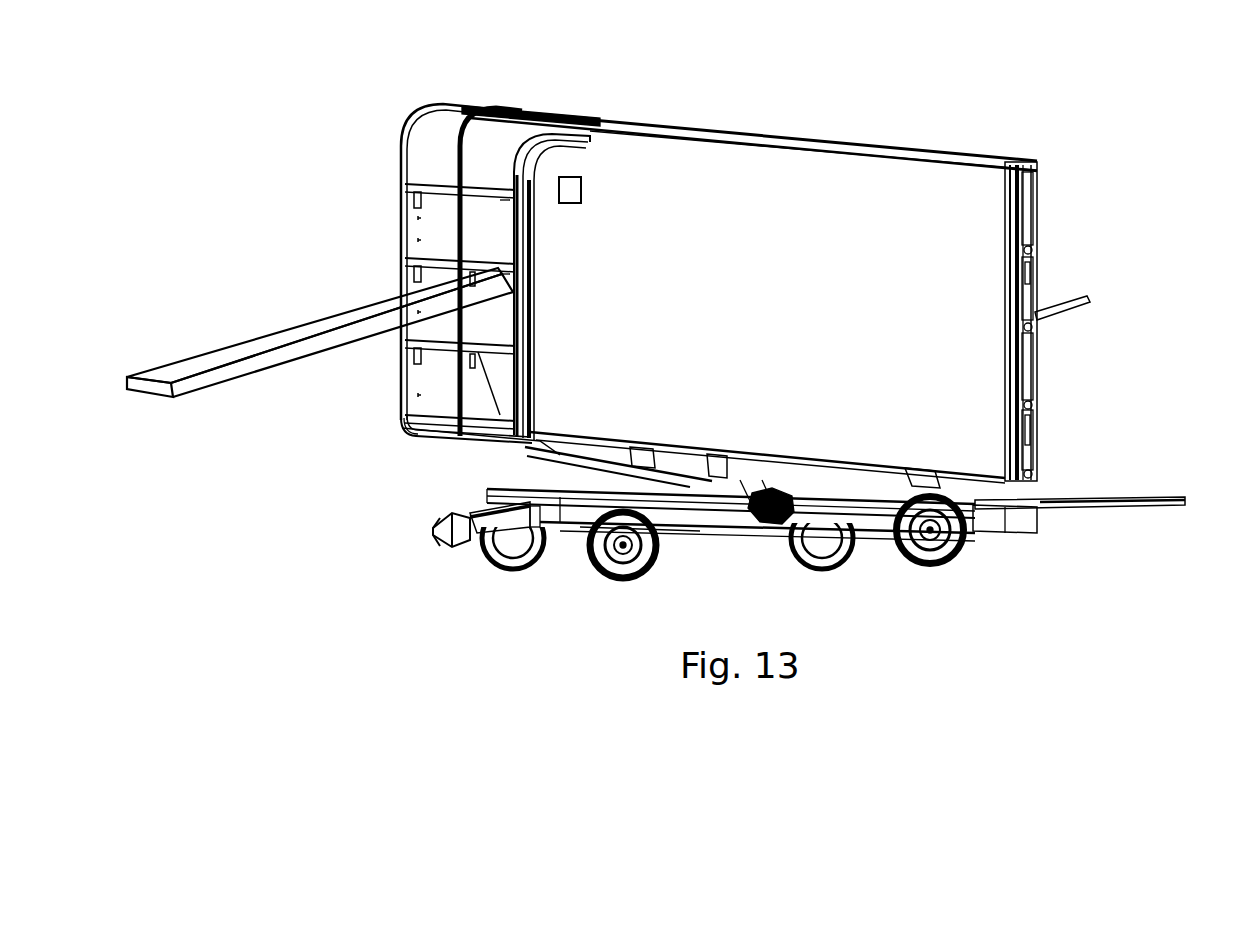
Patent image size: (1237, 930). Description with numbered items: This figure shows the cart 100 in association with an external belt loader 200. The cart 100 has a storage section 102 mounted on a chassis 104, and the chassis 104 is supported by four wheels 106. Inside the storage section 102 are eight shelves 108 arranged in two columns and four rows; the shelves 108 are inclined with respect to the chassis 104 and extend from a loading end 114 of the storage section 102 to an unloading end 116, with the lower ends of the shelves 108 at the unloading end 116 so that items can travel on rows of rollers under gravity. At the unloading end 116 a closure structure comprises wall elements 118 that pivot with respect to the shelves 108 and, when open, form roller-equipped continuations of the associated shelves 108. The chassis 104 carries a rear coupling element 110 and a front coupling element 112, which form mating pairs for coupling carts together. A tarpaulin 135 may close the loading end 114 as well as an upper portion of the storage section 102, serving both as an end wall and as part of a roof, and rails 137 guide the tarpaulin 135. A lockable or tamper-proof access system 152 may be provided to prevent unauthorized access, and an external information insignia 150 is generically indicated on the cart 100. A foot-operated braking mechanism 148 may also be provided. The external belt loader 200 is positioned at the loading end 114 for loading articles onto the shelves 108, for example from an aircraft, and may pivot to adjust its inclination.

The cart 100 is at (790, 105).
The storage section 102 is at (759, 321).
The chassis 104 is at (575, 489).
The wheels 106 is at (516, 560).
The shelves 108 is at (490, 183).
The rear coupling element 110 is at (1112, 511).
The front coupling element 112 is at (438, 531).
The loading end 114 is at (381, 249).
The unloading end 116 is at (1145, 270).
The wall elements 118 is at (1032, 221).
The tarpaulin 135 is at (521, 110).
The rails 137 is at (507, 116).
The foot-operated braking mechanism 148 is at (703, 532).
The external information insignia 150 is at (586, 185).
The lockable or tamper-proof access system 152 is at (378, 414).
The external belt loader 200 is at (257, 336).